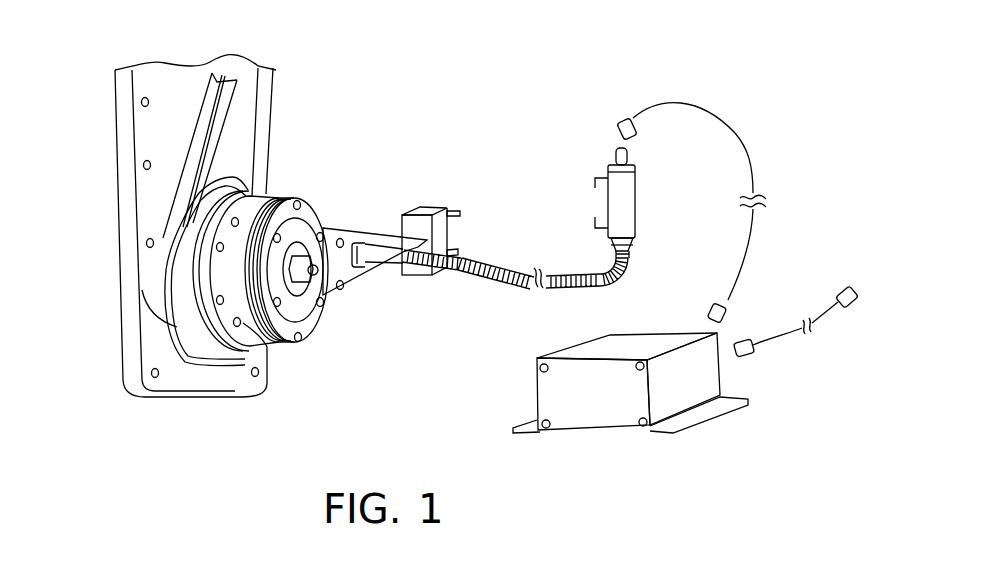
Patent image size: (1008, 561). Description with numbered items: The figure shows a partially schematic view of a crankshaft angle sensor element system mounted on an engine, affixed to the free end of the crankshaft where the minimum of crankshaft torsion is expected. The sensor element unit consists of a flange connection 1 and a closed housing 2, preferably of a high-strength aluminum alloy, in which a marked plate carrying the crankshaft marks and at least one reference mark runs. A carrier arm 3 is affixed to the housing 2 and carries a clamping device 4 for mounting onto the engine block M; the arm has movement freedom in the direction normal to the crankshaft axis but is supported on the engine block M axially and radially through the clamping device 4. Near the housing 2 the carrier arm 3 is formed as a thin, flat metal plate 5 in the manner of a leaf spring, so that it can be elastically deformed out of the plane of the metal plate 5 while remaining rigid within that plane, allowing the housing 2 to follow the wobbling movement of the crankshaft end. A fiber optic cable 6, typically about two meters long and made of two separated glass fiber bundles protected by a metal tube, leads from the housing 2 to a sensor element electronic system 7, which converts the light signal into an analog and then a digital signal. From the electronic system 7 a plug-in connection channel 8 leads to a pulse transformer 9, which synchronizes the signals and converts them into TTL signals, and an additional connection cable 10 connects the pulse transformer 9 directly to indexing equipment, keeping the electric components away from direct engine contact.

The engine block M is at (155, 197).
The flange connection 1 is at (226, 310).
The closed housing 2 is at (270, 200).
The carrier arm 3 is at (353, 234).
The clamping device 4 is at (427, 228).
The thin flat metal plate 5 is at (348, 270).
The fiber optic cable 6 is at (505, 278).
The sensor element electronic system 7 is at (620, 202).
The connection channel 8 is at (713, 113).
The pulse transformer 9 is at (598, 393).
The additional connection cable 10 is at (778, 338).